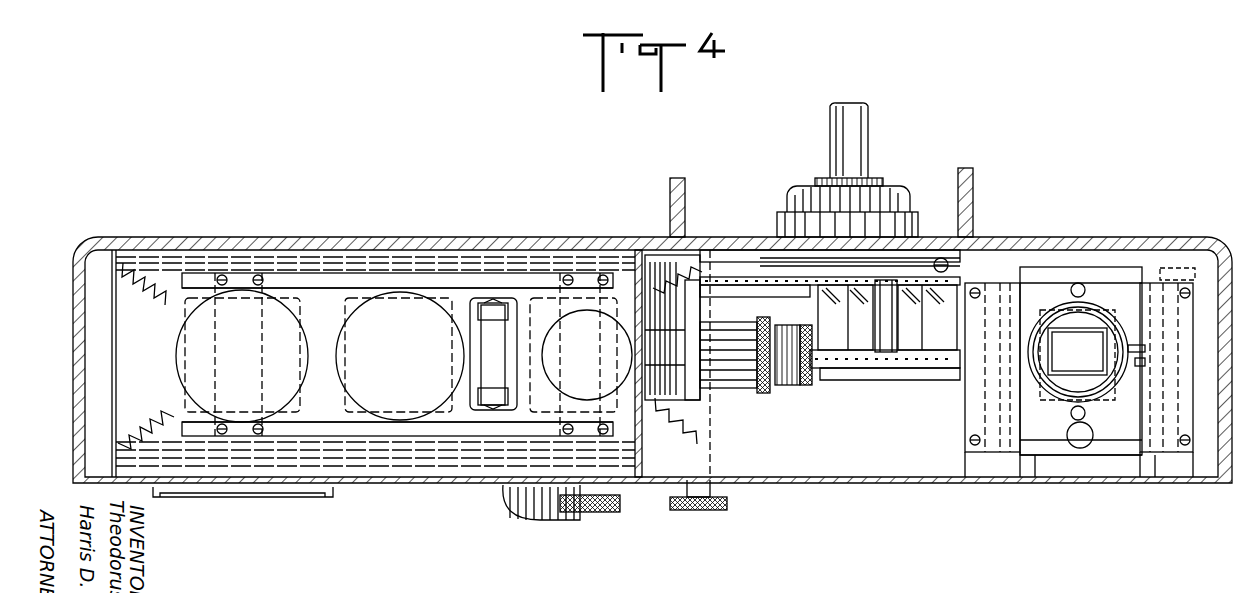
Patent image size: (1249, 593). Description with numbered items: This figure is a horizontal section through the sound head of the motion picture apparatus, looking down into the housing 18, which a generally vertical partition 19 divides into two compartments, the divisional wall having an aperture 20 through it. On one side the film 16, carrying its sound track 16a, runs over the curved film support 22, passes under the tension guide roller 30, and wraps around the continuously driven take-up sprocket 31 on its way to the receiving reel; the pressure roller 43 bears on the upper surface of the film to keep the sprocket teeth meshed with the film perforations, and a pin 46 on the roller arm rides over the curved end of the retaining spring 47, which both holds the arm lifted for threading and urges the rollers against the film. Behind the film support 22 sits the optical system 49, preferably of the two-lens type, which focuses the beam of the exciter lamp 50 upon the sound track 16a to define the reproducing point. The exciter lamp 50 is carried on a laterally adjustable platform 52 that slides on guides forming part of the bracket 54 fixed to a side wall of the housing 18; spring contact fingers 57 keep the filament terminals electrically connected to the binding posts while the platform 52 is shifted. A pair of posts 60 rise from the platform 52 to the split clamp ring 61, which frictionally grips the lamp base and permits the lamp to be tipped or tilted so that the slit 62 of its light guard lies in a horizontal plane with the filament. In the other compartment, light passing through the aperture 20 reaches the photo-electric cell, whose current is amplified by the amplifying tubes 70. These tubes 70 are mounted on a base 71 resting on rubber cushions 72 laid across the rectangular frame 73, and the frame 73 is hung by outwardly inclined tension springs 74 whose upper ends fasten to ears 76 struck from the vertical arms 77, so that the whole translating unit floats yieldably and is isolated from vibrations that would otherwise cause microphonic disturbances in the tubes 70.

The housing 18 is at (437, 241).
The partition 19 is at (630, 478).
The aperture 20 is at (642, 349).
The film support 22 is at (672, 403).
The tension guide roller 30 is at (795, 303).
The take-up sprocket 31 is at (920, 224).
The pressure roller 43 is at (893, 370).
The pin 46 is at (902, 284).
The retaining spring 47 is at (922, 290).
The optical system 49 is at (812, 390).
The film 16 is at (945, 368).
The sound track 16a is at (855, 368).
The exciter lamp 50 is at (1100, 320).
The platform 52 is at (1055, 448).
The bracket 54 is at (1075, 460).
The spring contact fingers 57 is at (968, 490).
The posts 60 is at (1080, 283).
The split clamp ring 61 is at (1110, 405).
The slit 62 is at (1048, 355).
The amplifying tubes 70 is at (320, 356).
The base 71 is at (373, 363).
The rubber cushions 72 is at (244, 437).
The frame 73 is at (327, 437).
The tension springs 74 is at (148, 298).
The ears 76 is at (170, 306).
The vertical arms 77 is at (110, 393).